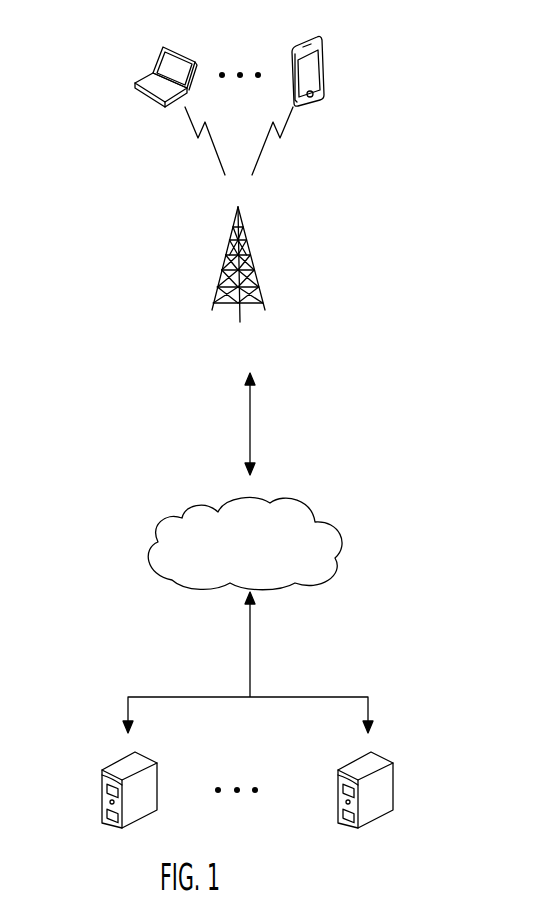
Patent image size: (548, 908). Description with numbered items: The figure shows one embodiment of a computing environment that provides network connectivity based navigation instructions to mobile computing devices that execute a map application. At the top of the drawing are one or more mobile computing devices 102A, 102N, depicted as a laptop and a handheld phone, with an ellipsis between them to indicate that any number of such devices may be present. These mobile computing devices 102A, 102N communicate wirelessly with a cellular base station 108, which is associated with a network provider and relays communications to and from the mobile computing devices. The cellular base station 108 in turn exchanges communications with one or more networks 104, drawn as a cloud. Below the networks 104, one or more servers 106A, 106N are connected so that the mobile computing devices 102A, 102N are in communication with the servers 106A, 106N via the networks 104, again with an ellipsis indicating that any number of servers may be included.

The mobile computing device 102A is at (148, 72).
The mobile computing device 102N is at (325, 68).
The cellular base station 108 is at (247, 257).
The network 104 is at (342, 562).
The server 106A is at (102, 787).
The server 106N is at (413, 775).